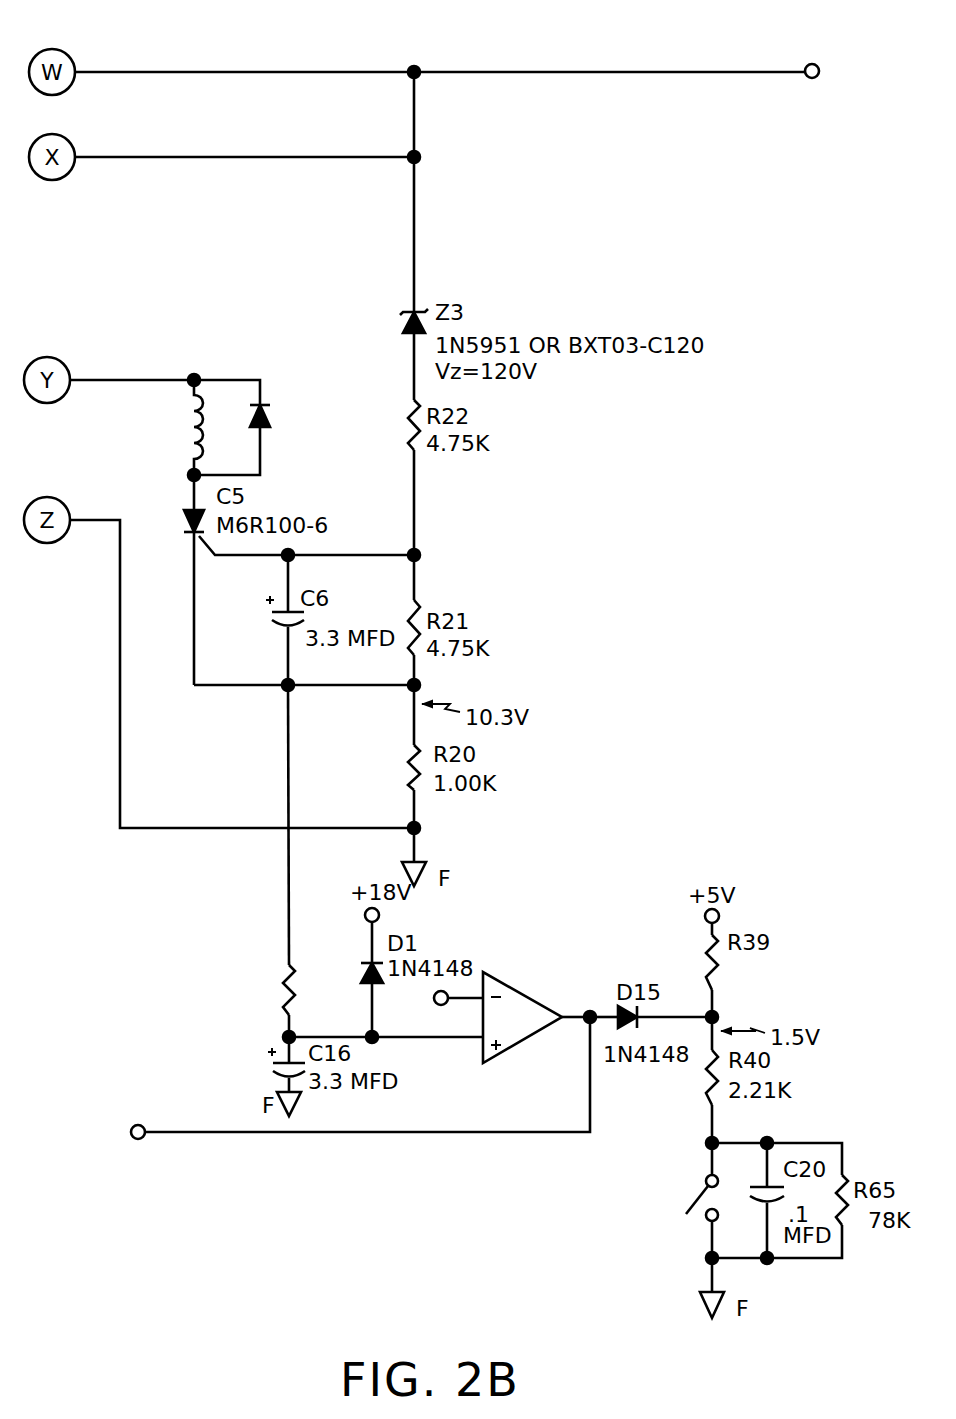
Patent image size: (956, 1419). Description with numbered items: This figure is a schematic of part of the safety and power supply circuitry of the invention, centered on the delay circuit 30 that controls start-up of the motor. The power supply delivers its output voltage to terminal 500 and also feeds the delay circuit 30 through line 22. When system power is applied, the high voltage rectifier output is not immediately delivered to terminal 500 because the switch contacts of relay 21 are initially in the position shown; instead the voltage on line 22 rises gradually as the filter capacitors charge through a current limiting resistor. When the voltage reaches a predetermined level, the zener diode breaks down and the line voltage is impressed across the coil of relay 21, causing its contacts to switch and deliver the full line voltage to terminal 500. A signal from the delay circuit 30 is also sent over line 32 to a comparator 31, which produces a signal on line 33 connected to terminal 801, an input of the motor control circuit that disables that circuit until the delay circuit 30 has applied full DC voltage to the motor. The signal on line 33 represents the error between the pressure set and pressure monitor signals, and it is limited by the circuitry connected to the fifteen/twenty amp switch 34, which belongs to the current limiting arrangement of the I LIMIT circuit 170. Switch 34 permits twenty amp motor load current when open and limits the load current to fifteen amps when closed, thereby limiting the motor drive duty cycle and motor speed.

The terminal 500 is at (807, 62).
The line 22 is at (310, 160).
The relay 21 is at (188, 372).
The delay circuit 30 is at (492, 589).
The line 32 is at (289, 905).
The comparator 31 is at (511, 973).
The line 33 is at (258, 1133).
The terminal 801 is at (130, 1127).
The I LIMIT circuit 170 is at (673, 1208).
The 15/20 amp switch 34 is at (701, 1220).